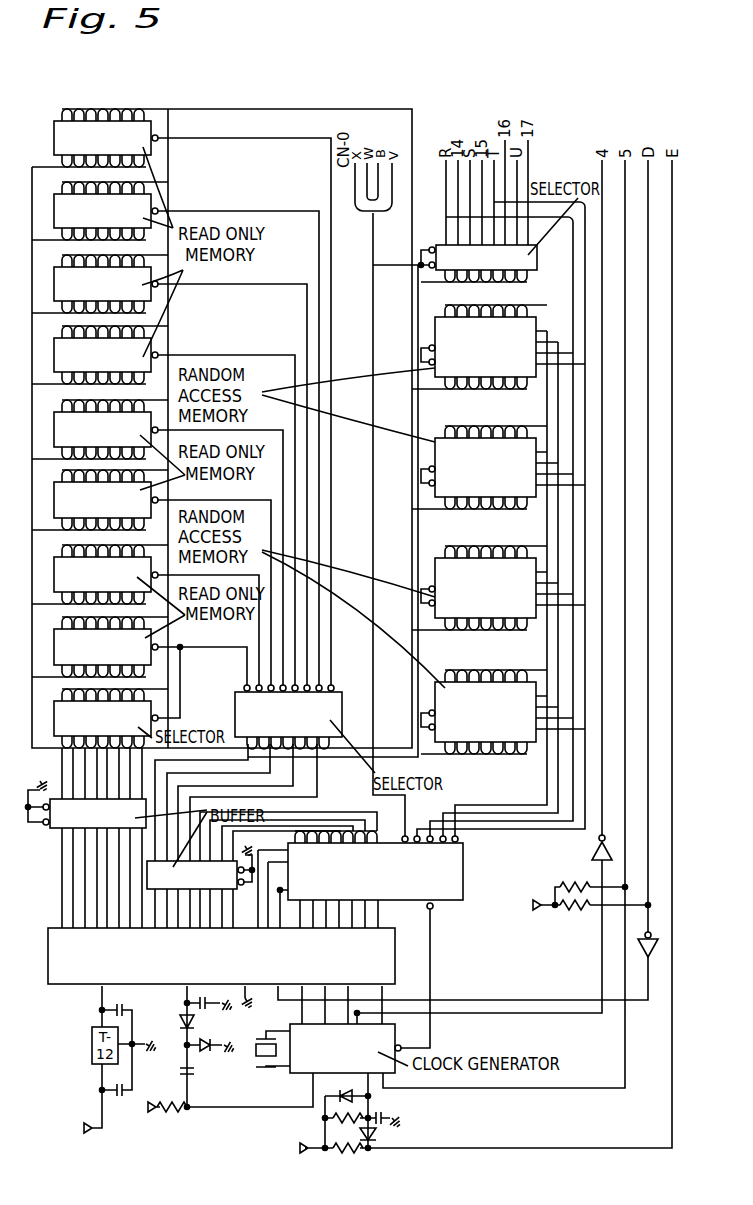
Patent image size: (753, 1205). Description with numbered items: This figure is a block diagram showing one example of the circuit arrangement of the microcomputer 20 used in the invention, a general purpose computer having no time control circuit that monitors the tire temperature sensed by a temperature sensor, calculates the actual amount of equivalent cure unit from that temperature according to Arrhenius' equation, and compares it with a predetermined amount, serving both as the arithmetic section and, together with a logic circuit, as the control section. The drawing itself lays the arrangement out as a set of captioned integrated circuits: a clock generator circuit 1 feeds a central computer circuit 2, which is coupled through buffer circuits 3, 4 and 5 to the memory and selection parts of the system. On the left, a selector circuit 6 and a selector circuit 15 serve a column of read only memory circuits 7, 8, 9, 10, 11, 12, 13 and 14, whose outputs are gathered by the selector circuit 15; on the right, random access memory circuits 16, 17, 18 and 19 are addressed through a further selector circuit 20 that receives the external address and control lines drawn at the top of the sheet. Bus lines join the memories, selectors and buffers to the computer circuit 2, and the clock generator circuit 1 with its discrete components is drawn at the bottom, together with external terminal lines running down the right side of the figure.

The clock generator IC1 1 is at (345, 1048).
The computer IC2 2 is at (221, 956).
The buffer IC3 3 is at (86, 803).
The buffer IC4 4 is at (201, 866).
The buffer IC5 5 is at (375, 872).
The selector IC6 6 is at (106, 718).
The read only memory IC7 7 is at (106, 647).
The read only memory IC8 8 is at (106, 574).
The read only memory IC9 9 is at (106, 500).
The read only memory IC10 10 is at (106, 429).
The read only memory IC11 11 is at (106, 355).
The read only memory IC12 12 is at (106, 284).
The read only memory IC13 13 is at (106, 211).
The read only memory IC14 14 is at (106, 138).
The selector IC15 15 is at (288, 717).
The random access memory IC16 16 is at (503, 712).
The random access memory IC17 17 is at (498, 588).
The random access memory IC18 18 is at (498, 467).
The random access memory IC19 19 is at (498, 347).
The microcomputer 20 is at (479, 263).